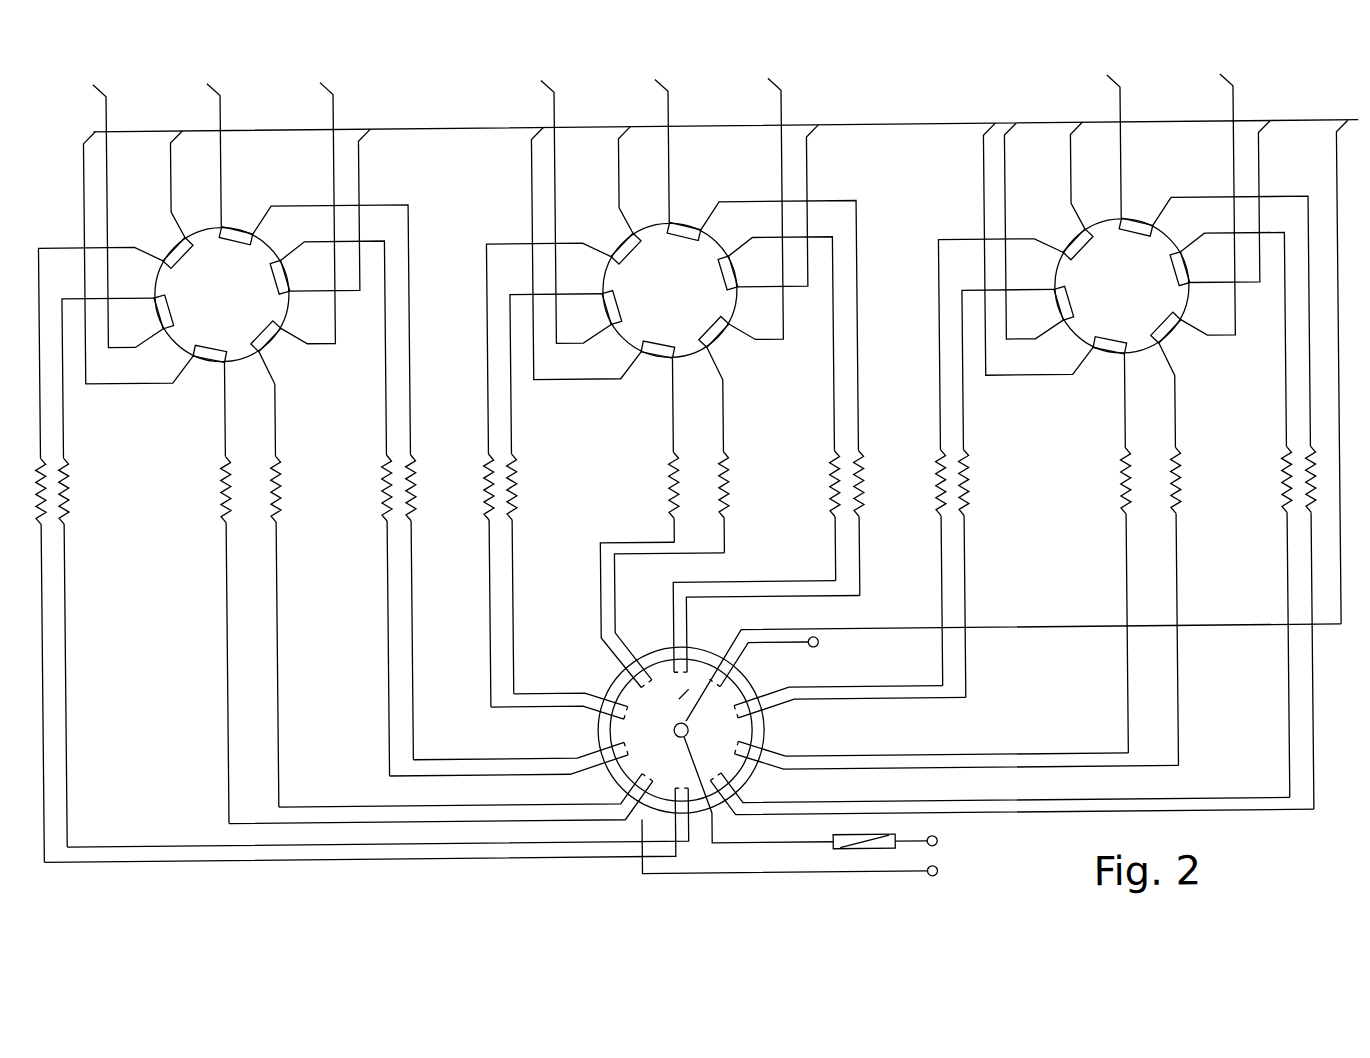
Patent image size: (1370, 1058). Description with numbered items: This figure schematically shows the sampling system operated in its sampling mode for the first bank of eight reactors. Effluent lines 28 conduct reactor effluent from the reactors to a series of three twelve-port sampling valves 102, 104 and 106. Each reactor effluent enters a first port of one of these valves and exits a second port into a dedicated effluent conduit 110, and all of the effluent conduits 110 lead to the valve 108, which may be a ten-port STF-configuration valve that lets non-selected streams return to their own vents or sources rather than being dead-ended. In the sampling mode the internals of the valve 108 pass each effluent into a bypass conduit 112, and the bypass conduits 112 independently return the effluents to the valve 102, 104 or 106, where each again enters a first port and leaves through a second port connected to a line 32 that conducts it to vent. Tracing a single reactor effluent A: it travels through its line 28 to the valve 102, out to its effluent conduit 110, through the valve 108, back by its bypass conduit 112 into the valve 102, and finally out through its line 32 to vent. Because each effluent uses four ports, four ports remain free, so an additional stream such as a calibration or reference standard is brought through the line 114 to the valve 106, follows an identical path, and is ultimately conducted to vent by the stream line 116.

The effluent lines 28 is at (1250, 101).
The lines 32 is at (1260, 188).
The sampling valve 102 is at (247, 306).
The sampling valve 104 is at (695, 306).
The sampling valve 106 is at (1147, 306).
The valve 108 is at (712, 650).
The effluent conduits 110 is at (1311, 748).
The bypass conduits 112 is at (1293, 602).
The line 114 is at (985, 188).
The stream 116 is at (1006, 216).
The reactor effluent A is at (99, 86).